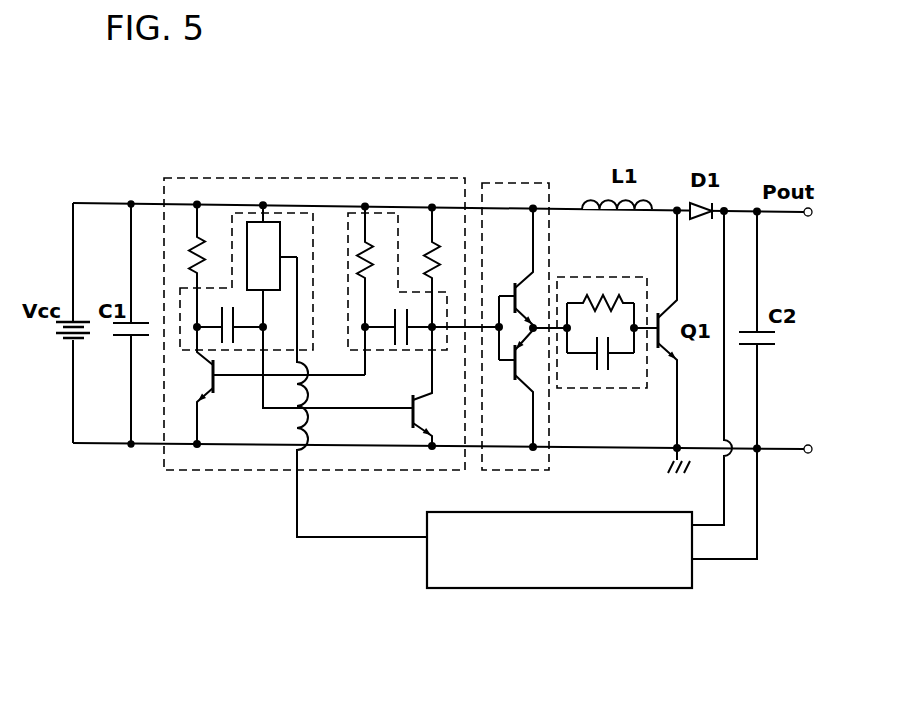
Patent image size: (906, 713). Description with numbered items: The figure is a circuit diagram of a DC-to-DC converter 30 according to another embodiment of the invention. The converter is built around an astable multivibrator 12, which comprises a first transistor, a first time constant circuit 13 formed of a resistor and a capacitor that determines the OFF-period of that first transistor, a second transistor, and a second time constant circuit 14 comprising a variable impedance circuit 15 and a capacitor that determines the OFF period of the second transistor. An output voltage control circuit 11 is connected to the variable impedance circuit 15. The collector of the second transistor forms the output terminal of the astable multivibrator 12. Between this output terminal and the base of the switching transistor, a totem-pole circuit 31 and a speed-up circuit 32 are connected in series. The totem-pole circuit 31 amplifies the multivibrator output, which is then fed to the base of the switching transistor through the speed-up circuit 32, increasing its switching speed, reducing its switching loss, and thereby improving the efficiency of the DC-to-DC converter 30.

The output voltage control circuit 11 is at (605, 590).
The astable multivibrator 12 is at (180, 177).
The first time constant circuit 13 is at (395, 207).
The second time constant circuit 14 is at (292, 208).
The variable impedance circuit 15 is at (262, 212).
The DC-to-DC converter 30 is at (426, 133).
The totem-pole circuit 31 is at (516, 183).
The speed-up circuit 32 is at (608, 277).